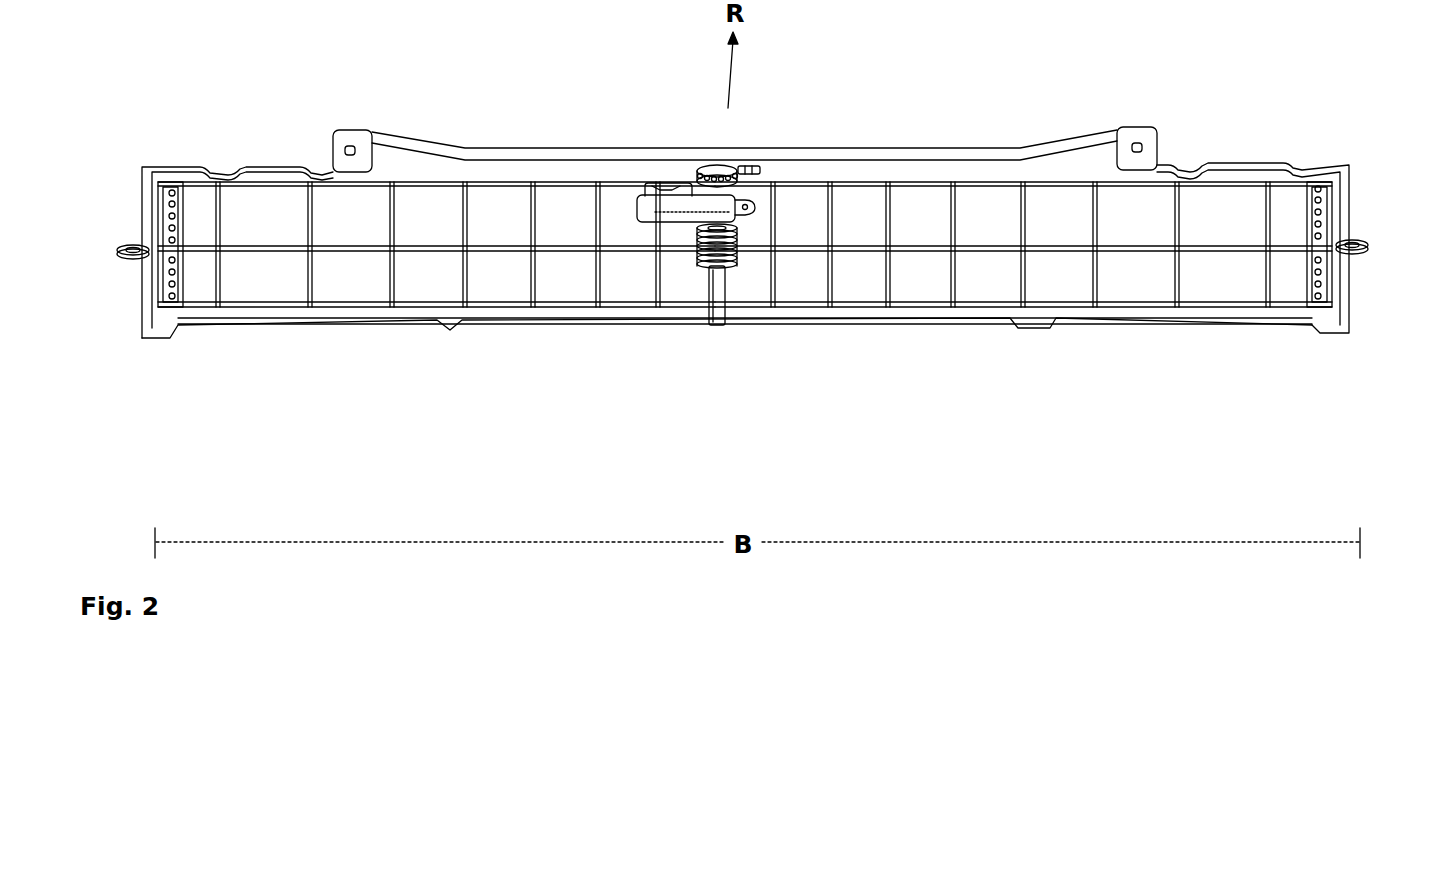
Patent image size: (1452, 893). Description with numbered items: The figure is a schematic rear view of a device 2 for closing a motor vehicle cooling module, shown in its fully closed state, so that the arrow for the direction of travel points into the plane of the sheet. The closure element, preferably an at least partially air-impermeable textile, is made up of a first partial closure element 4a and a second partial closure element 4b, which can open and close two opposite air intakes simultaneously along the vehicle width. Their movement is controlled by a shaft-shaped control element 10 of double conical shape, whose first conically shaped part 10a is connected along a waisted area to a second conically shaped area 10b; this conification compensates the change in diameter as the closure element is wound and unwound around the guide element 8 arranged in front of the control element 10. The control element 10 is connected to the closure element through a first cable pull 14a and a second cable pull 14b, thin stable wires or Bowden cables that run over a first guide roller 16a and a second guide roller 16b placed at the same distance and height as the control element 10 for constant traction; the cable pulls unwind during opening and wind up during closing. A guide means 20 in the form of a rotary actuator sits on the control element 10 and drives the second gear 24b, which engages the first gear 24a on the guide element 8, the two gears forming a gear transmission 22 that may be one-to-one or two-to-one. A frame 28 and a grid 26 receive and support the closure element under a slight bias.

The device 2 is at (1183, 415).
The first partial closure element 4a is at (505, 285).
The second partial closure element 4b is at (1230, 188).
The guide element 8 is at (780, 148).
The control element 10 is at (731, 290).
The first conically shaped part 10a is at (700, 272).
The second conically shaped area 10b is at (740, 248).
The first cable pull 14a is at (377, 257).
The second cable pull 14b is at (1137, 255).
The first guide roller 16a is at (135, 263).
The second guide roller 16b is at (1358, 238).
The guide means 20 is at (687, 183).
The gear transmission 22 is at (763, 178).
The first gear 24a is at (745, 165).
The second gear 24b is at (717, 162).
The grid 26 is at (1025, 283).
The frame 28 is at (395, 148).